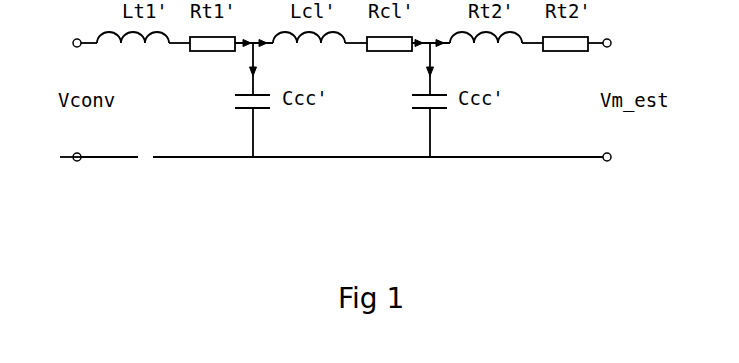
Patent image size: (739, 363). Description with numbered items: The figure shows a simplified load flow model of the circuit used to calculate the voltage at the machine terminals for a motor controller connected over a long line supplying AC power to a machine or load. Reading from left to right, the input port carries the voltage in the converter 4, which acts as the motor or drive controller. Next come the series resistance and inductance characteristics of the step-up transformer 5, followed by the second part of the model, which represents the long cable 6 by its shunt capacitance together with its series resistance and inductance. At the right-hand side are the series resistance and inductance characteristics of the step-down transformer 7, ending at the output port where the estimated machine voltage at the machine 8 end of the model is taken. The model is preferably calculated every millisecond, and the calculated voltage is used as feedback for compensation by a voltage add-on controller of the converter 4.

The converter 4 is at (75, 181).
The step-up transformer 5 is at (171, 181).
The long cable 6 is at (340, 181).
The step-down transformer 7 is at (520, 181).
The machine 8 is at (602, 181).